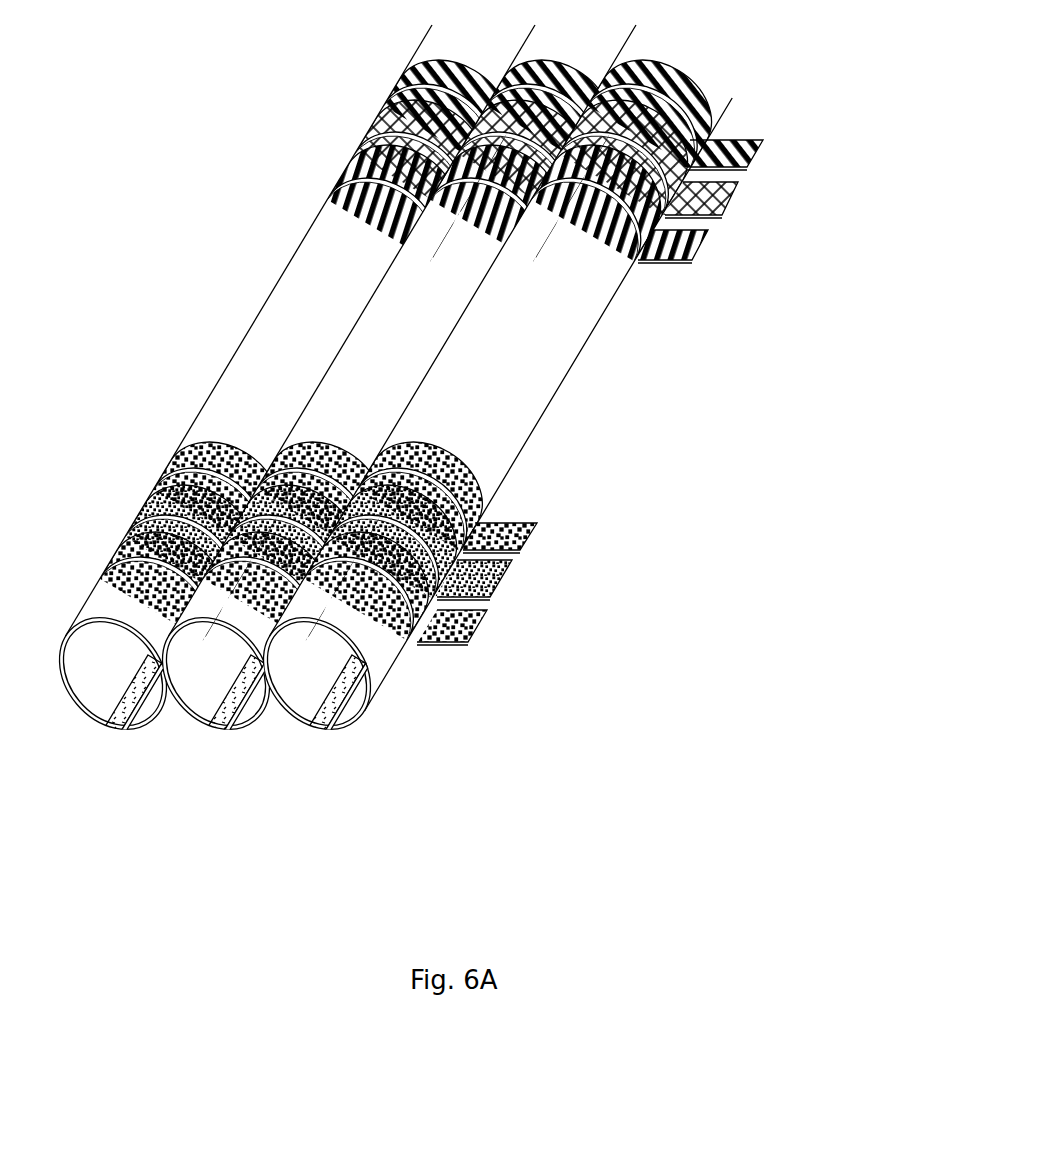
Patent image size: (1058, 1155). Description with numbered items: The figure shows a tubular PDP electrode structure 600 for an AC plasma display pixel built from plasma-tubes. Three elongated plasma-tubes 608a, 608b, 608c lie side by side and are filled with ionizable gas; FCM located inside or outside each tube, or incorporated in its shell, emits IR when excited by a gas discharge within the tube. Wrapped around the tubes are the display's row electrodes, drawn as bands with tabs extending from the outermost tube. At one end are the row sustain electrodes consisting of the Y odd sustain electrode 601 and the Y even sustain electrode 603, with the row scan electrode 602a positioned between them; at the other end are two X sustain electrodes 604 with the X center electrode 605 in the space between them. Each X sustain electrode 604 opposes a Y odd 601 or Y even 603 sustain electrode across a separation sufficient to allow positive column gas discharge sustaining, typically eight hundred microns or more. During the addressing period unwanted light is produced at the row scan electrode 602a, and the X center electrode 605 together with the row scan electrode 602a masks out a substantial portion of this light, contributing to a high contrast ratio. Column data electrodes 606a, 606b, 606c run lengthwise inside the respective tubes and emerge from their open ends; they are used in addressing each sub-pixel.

The tubular PDP electrode structure 600 is at (478, 450).
The Y odd sustain electrode 601 is at (763, 140).
The row scan electrode 602a is at (738, 183).
The Y even sustain electrode 603 is at (708, 230).
The X sustain electrode 604 is at (537, 523).
The X center electrode 605 is at (512, 560).
The column data electrode 606a is at (83, 776).
The column data electrode 606b is at (186, 776).
The column data electrode 606c is at (287, 776).
The plasma-tube 608a is at (232, 413).
The plasma-tube 608b is at (325, 412).
The plasma-tube 608c is at (530, 366).